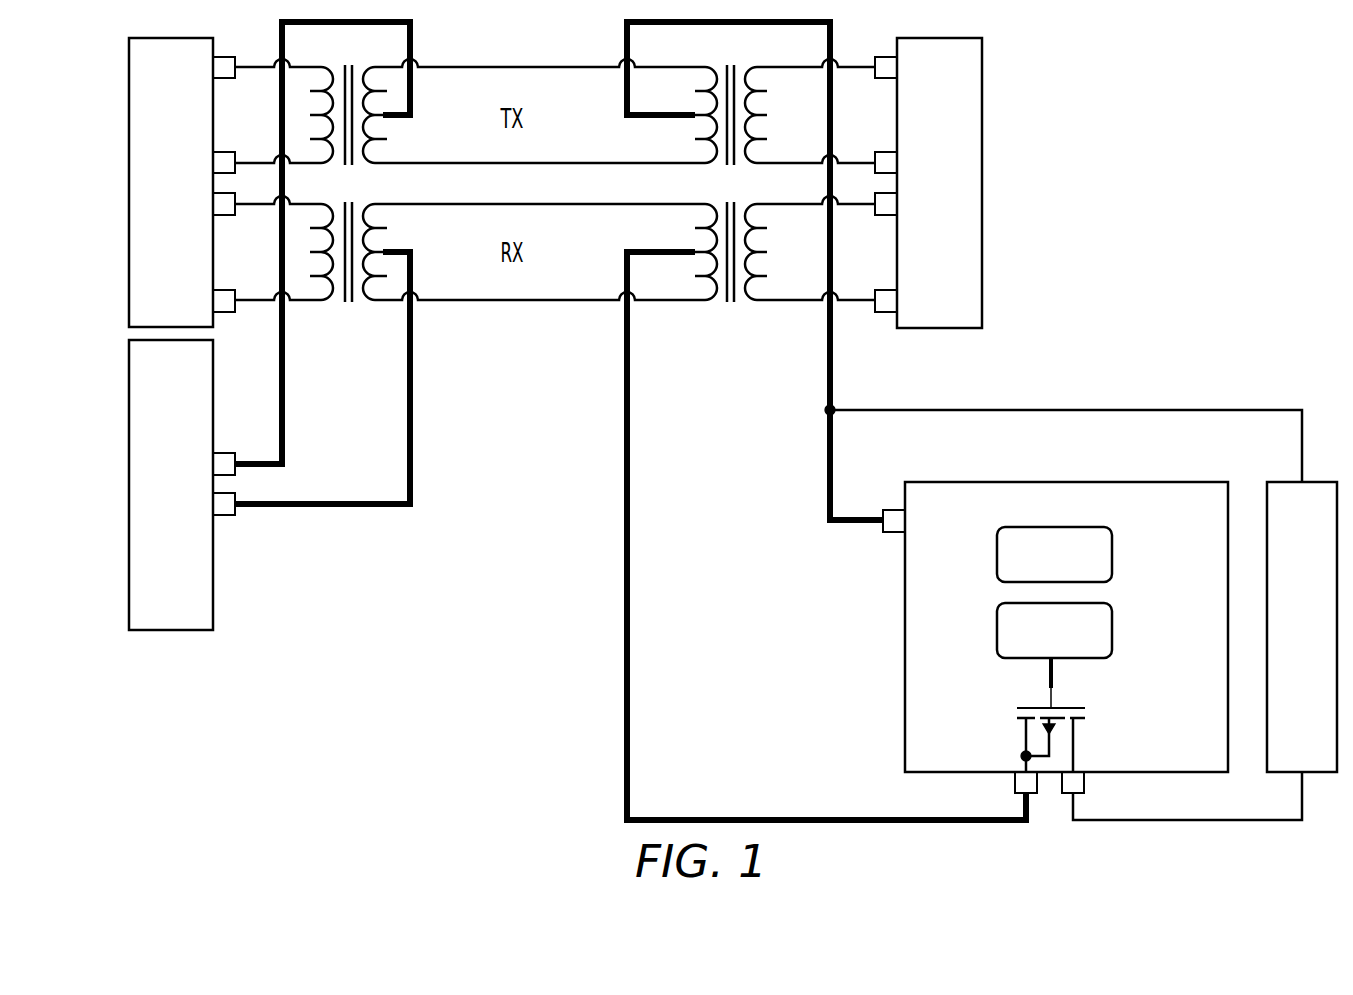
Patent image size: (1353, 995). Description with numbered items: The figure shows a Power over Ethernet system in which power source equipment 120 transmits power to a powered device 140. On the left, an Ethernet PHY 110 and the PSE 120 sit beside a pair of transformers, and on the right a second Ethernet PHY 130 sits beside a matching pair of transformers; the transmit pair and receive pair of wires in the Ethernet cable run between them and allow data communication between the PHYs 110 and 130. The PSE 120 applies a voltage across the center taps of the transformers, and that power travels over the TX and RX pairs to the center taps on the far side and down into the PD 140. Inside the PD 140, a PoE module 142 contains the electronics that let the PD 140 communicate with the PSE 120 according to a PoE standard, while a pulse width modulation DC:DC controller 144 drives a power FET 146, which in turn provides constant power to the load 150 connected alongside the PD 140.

The Ethernet PHY 110 is at (129, 167).
The power source equipment 120 is at (129, 475).
The Ethernet PHY 130 is at (982, 172).
The powered device 140 is at (1060, 482).
The PoE module 142 is at (997, 554).
The pulse width modulation DC:DC controller 144 is at (997, 631).
The power FET 146 is at (1017, 712).
The load 150 is at (1277, 484).